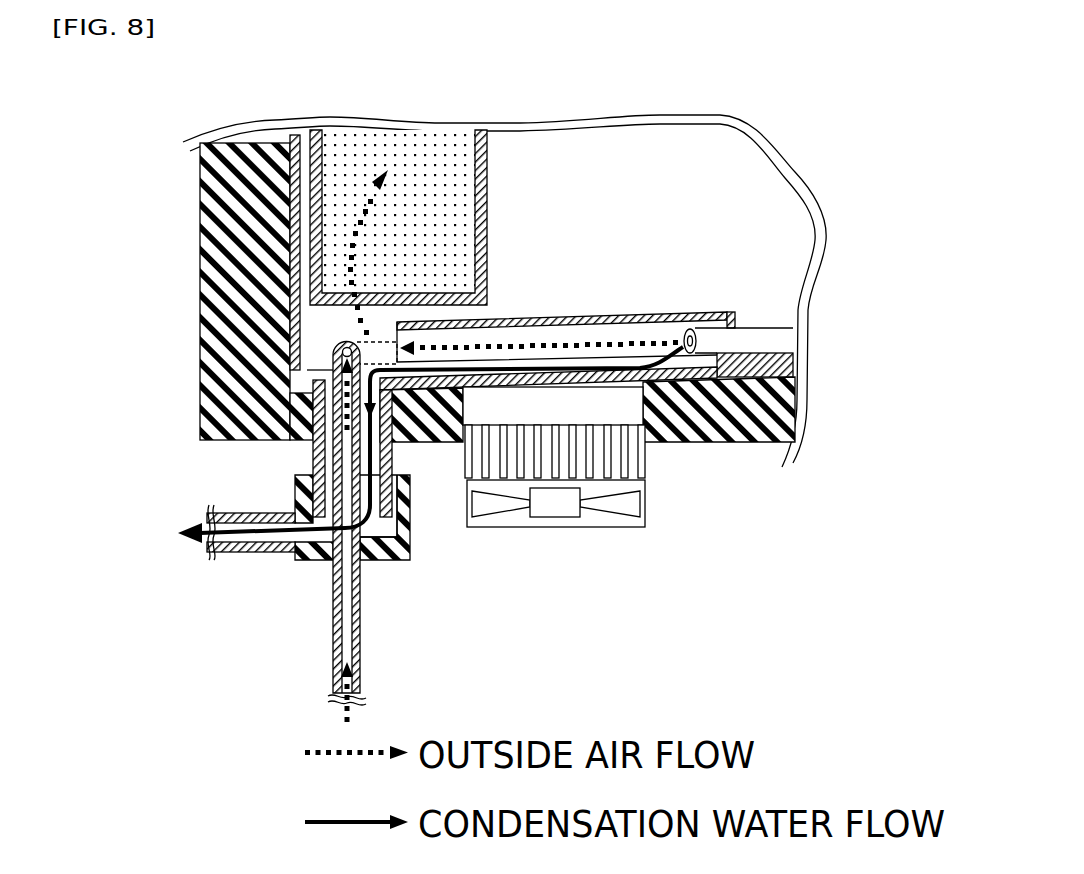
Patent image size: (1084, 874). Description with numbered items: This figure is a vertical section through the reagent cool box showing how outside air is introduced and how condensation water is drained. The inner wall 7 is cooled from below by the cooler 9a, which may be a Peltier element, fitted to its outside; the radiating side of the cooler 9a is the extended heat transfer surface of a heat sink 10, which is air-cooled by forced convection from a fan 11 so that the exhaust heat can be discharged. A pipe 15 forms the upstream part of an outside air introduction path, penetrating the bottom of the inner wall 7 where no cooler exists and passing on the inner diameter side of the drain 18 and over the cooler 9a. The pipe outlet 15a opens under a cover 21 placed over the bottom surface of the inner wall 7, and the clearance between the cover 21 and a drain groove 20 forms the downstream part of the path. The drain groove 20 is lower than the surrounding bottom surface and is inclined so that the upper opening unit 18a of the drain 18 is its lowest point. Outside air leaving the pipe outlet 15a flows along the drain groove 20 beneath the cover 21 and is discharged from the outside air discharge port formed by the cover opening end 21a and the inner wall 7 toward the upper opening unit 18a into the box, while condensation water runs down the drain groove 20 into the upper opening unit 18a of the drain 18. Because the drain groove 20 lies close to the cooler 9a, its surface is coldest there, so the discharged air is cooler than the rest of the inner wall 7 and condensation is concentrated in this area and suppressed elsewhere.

The inner wall 7 is at (282, 182).
The cover opening end 21a is at (393, 325).
The cover 21 is at (627, 313).
The pipe outlet 15a is at (692, 327).
The pipe 15 is at (753, 330).
The upper opening unit 18a is at (343, 355).
The drain 18 is at (330, 408).
The drain groove 20 is at (673, 367).
The cooler 9a is at (647, 408).
The heat sink 10 is at (458, 477).
The fan 11 is at (507, 532).